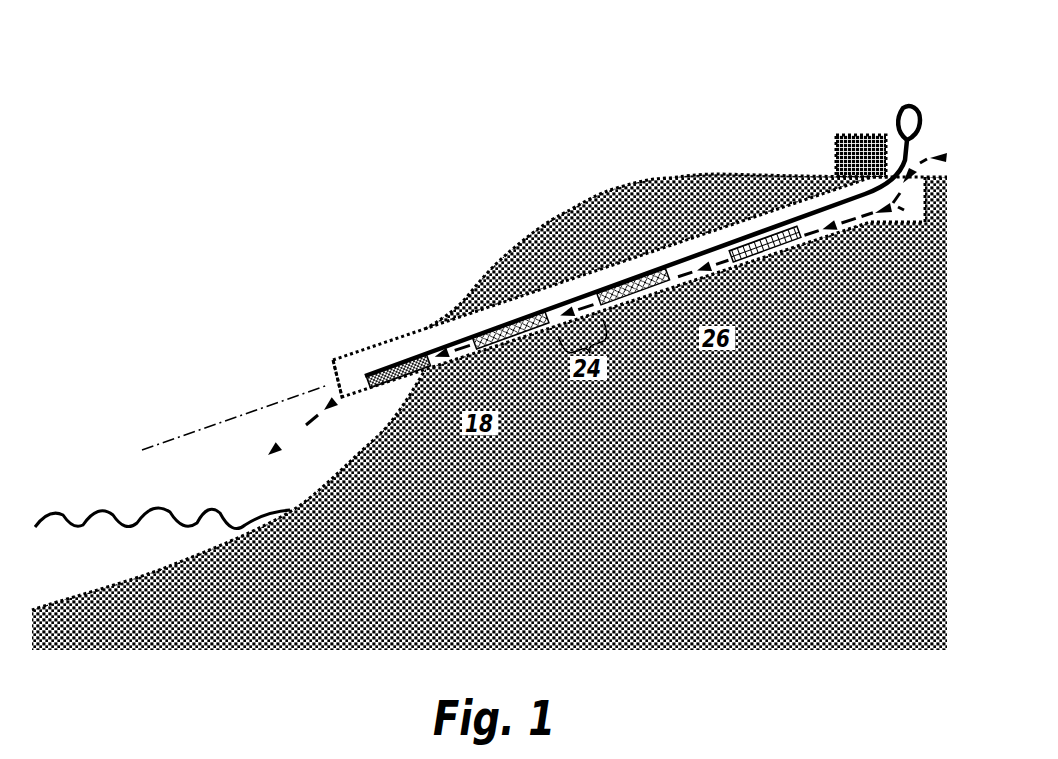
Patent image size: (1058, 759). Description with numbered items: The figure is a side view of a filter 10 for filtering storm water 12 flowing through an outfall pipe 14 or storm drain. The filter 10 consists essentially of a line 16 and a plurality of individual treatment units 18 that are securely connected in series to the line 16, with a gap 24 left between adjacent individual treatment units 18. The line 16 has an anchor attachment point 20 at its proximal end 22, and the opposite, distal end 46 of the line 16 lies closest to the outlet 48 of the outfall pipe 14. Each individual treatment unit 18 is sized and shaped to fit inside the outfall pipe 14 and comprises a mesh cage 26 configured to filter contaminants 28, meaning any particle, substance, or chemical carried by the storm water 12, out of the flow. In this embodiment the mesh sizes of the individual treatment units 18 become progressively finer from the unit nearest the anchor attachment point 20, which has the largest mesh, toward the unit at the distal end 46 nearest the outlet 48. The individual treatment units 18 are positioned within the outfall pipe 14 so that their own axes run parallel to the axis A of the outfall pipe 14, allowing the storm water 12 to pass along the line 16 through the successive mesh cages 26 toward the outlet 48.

The filter 10 is at (328, 116).
The storm water 12 is at (293, 432).
The outfall pipe 14 is at (343, 357).
The line 16 is at (831, 202).
The individual treatment unit 18 is at (434, 368).
The anchor attachment point 20 is at (903, 106).
The proximal end 22 is at (873, 124).
The gap 24 is at (589, 356).
The mesh cage 26 is at (682, 276).
The contaminants 28 is at (905, 212).
The distal end 46 is at (385, 356).
The outlet 48 is at (316, 369).
The axis of the outfall pipe A is at (198, 433).